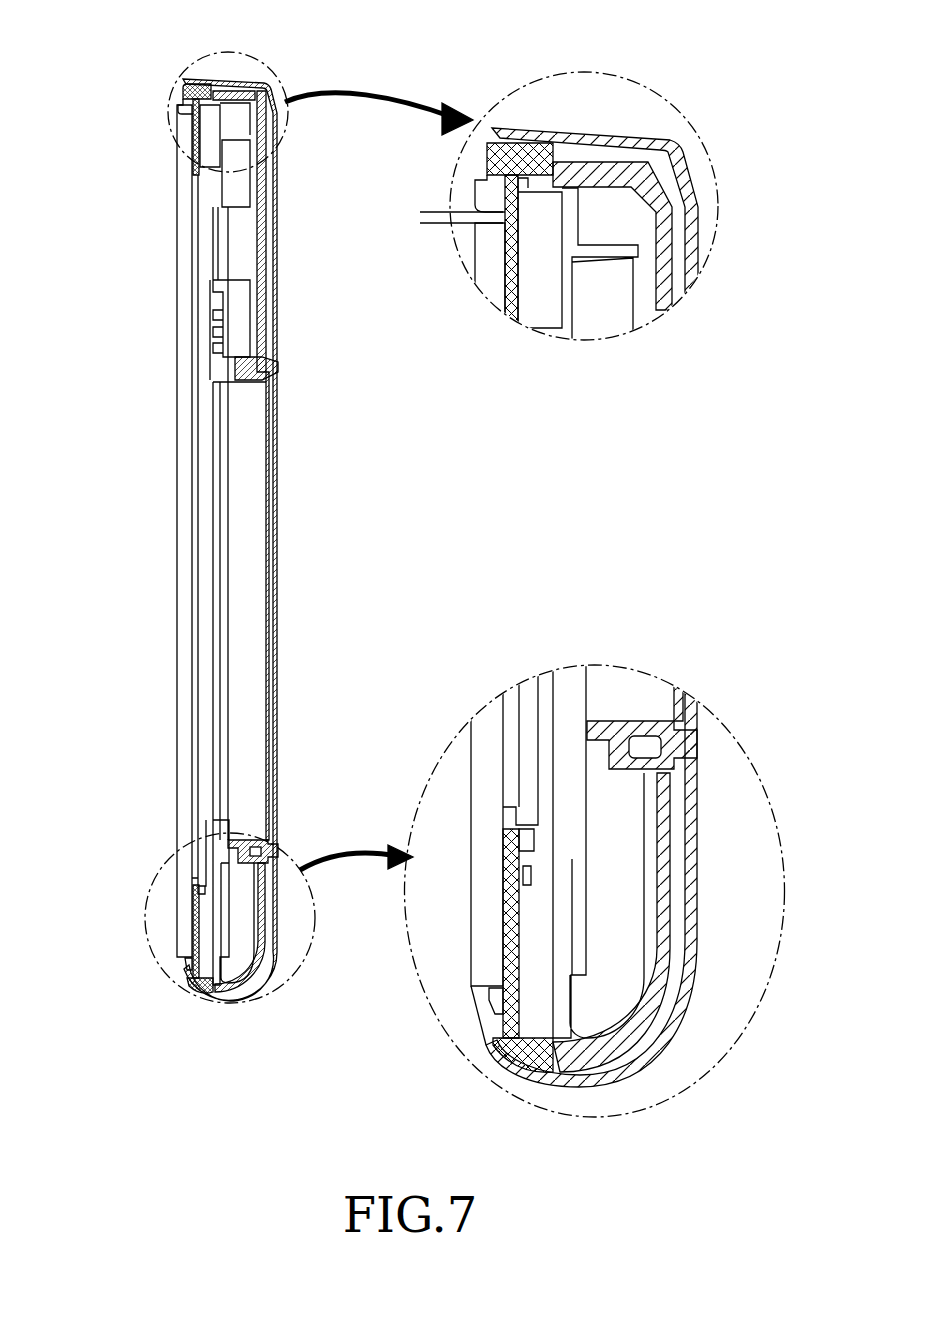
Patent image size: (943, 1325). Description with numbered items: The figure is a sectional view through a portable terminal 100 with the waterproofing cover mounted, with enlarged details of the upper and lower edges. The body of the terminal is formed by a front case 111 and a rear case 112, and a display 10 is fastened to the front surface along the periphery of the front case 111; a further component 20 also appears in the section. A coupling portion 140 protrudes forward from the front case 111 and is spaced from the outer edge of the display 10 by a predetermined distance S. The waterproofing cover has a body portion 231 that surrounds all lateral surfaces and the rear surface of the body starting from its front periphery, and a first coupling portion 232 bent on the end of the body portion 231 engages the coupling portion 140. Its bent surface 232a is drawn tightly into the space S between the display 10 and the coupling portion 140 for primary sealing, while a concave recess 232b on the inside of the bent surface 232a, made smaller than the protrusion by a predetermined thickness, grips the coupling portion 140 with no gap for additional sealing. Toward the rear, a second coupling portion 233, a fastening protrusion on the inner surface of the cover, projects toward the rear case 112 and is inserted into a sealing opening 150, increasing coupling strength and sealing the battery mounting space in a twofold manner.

The portable terminal 100 is at (144, 60).
The display 10 is at (178, 596).
The front case / frame 20 is at (614, 688).
The front case 111 is at (528, 152).
The rear case 112 is at (250, 88).
The coupling portion 140 is at (545, 255).
The sealing opening 150 is at (700, 745).
The body portion 231 is at (279, 408).
The first coupling portion 232 is at (62, 93).
The bent surface 232a is at (185, 140).
The concave recess 232b is at (178, 106).
The second coupling portion 233 is at (275, 367).
The predetermined distance S is at (420, 196).